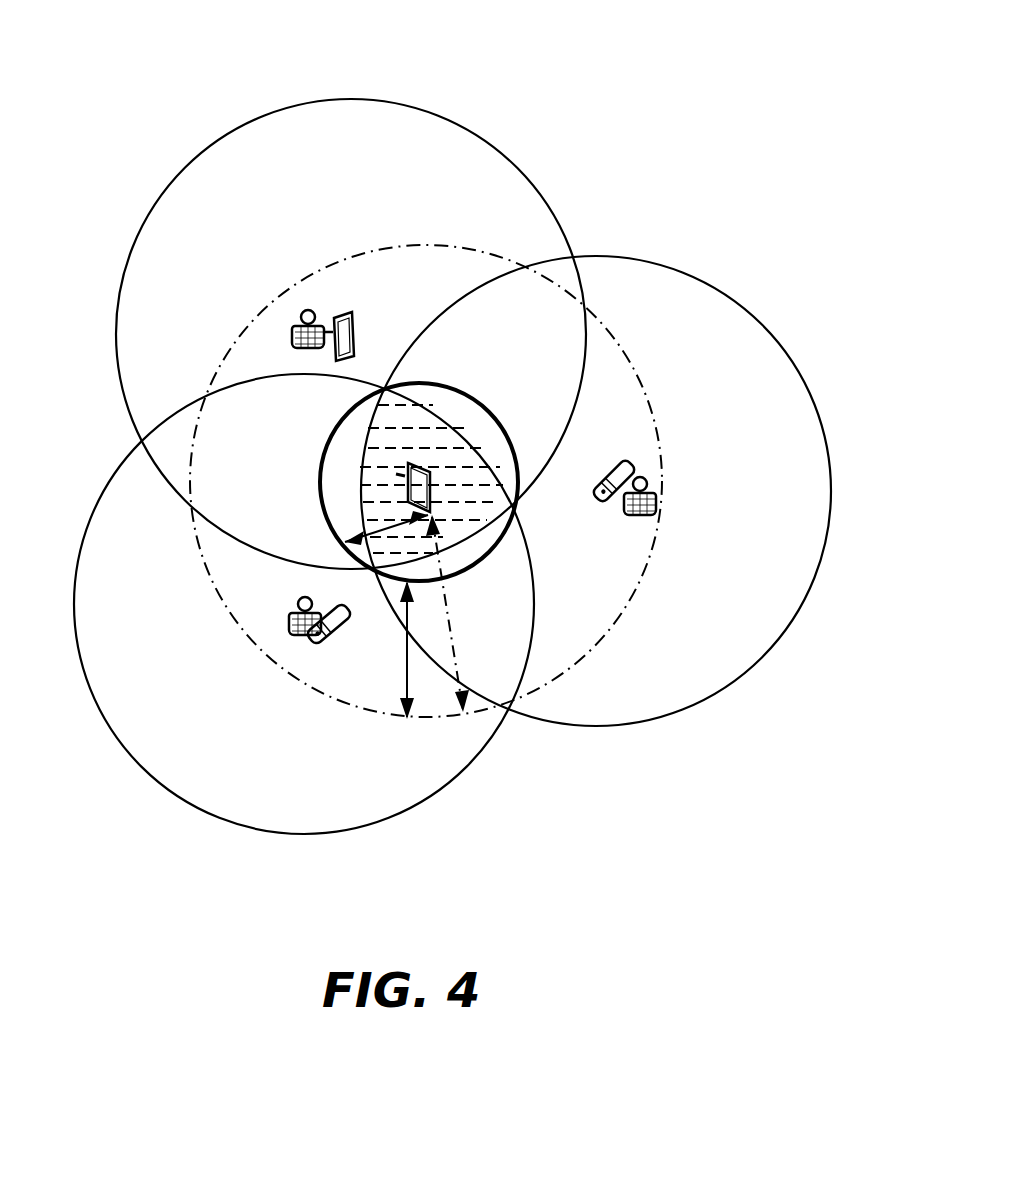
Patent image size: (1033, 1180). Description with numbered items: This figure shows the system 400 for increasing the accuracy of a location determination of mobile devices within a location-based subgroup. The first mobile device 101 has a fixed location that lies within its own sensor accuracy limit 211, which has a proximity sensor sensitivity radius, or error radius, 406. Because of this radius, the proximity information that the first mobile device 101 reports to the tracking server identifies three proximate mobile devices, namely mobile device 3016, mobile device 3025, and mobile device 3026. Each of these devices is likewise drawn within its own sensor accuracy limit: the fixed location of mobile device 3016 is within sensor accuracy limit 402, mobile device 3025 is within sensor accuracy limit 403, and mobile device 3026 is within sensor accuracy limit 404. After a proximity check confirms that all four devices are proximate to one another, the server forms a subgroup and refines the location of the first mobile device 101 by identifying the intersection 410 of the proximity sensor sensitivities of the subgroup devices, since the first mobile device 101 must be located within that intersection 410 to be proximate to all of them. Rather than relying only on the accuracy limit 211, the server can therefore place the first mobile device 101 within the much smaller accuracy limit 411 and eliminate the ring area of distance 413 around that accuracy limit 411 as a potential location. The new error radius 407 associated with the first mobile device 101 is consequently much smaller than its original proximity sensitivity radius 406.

The position determination scenario 400 is at (599, 68).
The sensor accuracy limit 402 is at (193, 157).
The sensor accuracy limit 403 is at (667, 258).
The sensor accuracy limit 404 is at (470, 770).
The sensor accuracy limit 211 is at (660, 437).
The first mobile device 101 is at (428, 462).
The intersection 410 is at (387, 450).
The accuracy limit 411 is at (362, 398).
The new error radius 407 is at (365, 533).
The proximity sensitivity radius 406 is at (445, 603).
The distance 413 is at (407, 672).
The mobile device 3016 is at (297, 330).
The mobile device 3026 is at (297, 610).
The mobile device 3025 is at (628, 522).